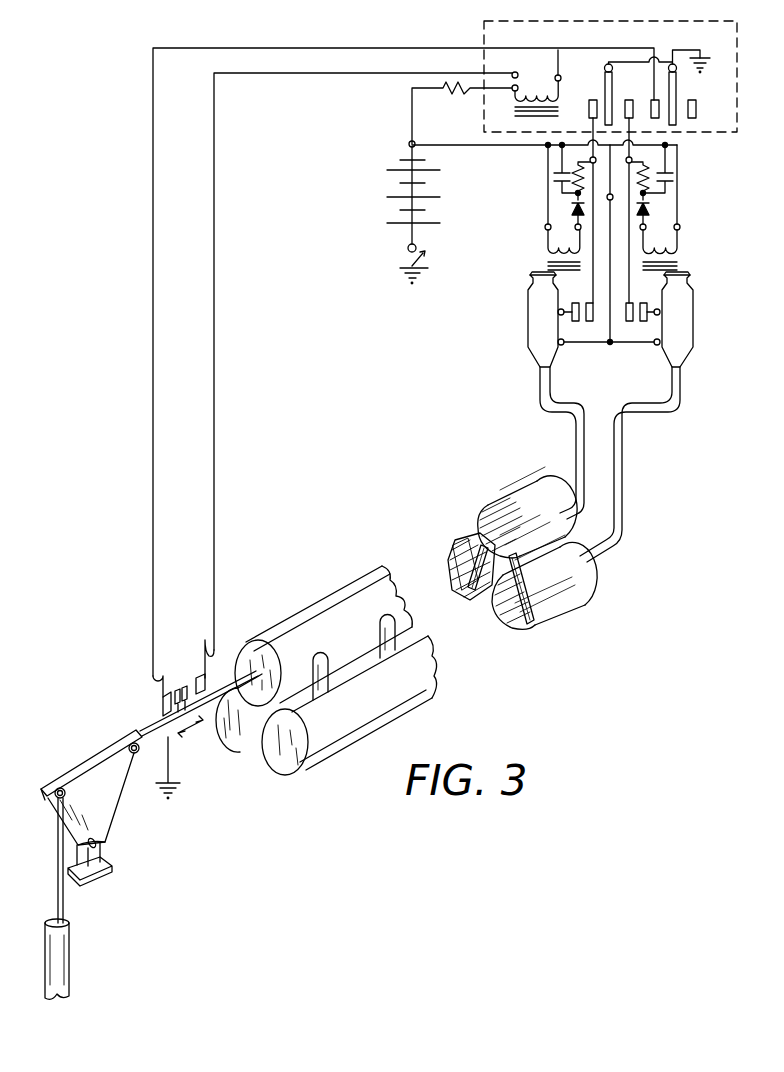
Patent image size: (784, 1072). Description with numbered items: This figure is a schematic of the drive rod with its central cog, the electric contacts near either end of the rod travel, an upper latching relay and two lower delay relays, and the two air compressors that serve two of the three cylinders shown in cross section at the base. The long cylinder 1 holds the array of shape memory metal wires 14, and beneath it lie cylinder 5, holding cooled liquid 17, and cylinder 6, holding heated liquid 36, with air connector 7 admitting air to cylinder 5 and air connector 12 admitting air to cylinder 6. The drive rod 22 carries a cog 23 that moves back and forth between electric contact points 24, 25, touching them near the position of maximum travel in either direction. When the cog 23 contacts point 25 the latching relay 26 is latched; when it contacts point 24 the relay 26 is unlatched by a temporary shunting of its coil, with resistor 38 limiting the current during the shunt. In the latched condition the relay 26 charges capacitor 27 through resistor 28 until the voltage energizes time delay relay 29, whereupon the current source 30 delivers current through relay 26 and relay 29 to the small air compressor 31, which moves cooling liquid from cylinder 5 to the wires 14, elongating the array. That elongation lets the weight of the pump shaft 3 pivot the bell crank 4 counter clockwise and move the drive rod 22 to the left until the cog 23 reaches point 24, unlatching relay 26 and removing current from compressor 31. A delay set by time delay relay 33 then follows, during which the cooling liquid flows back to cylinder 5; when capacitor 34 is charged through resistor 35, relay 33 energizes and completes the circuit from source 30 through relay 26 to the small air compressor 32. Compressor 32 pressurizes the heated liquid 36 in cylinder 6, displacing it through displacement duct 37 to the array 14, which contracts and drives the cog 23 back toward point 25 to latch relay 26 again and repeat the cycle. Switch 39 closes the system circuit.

The long cylinder 1 is at (315, 603).
The pump shaft 3 is at (66, 900).
The bell crank 4 is at (119, 805).
The cylinder 5 is at (580, 612).
The cylinder 6 is at (470, 527).
The air connector 7 is at (622, 500).
The air connector 12 is at (575, 454).
The shape memory metal wires 14 is at (490, 506).
The cooled liquid 17 is at (497, 605).
The drive rod 22 is at (150, 726).
The cog 23 is at (186, 688).
The electric contact point 24 is at (160, 708).
The electric contact point 25 is at (202, 676).
The latching relay 26 is at (484, 32).
The capacitor 27 is at (676, 172).
The resistor 28 is at (672, 193).
The time delay relay 29 is at (665, 250).
The current source 30 is at (386, 188).
The small air compressor 31 is at (697, 318).
The small air compressor 32 is at (527, 318).
The time delay relay 33 is at (562, 250).
The capacitor 34 is at (560, 181).
The resistor 35 is at (560, 172).
The heated liquid 36 is at (455, 553).
The displacement duct 37 is at (470, 570).
The resistor 38 is at (456, 96).
The switch 39 is at (407, 259).